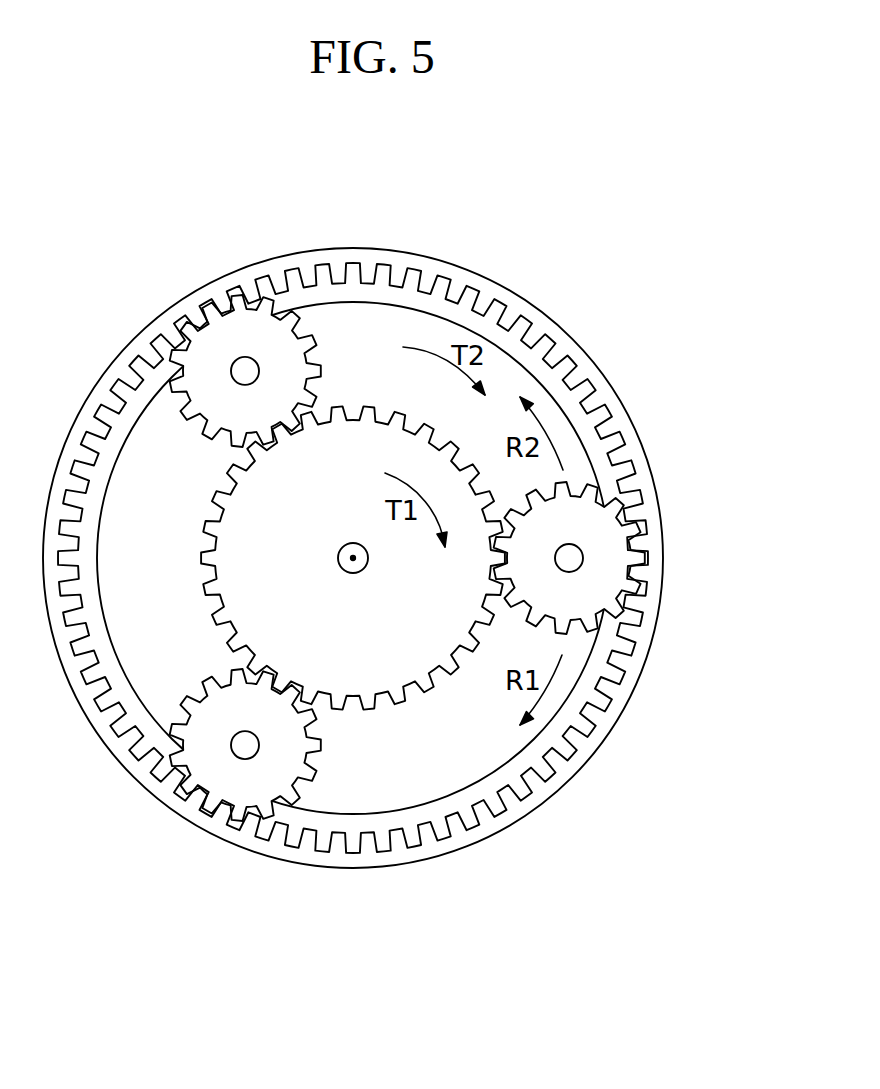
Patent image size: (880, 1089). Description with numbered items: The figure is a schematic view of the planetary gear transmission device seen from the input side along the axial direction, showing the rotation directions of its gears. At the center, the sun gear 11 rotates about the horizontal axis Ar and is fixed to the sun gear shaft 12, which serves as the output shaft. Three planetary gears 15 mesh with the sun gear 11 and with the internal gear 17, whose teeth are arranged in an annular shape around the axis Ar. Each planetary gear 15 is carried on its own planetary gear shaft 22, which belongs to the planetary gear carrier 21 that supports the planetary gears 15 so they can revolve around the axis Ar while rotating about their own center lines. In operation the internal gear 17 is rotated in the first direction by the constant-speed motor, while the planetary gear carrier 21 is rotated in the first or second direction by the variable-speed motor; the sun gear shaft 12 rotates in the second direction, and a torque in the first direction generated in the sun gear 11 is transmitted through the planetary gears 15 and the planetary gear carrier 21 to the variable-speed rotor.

The sun gear 11 is at (400, 453).
The sun gear shaft 12 is at (353, 545).
The planetary gears 15 is at (215, 335).
The internal gear 17 is at (653, 552).
The planetary gear carrier 21 is at (367, 792).
The planetary gear shaft 22 is at (249, 357).
The axis Ar is at (353, 560).